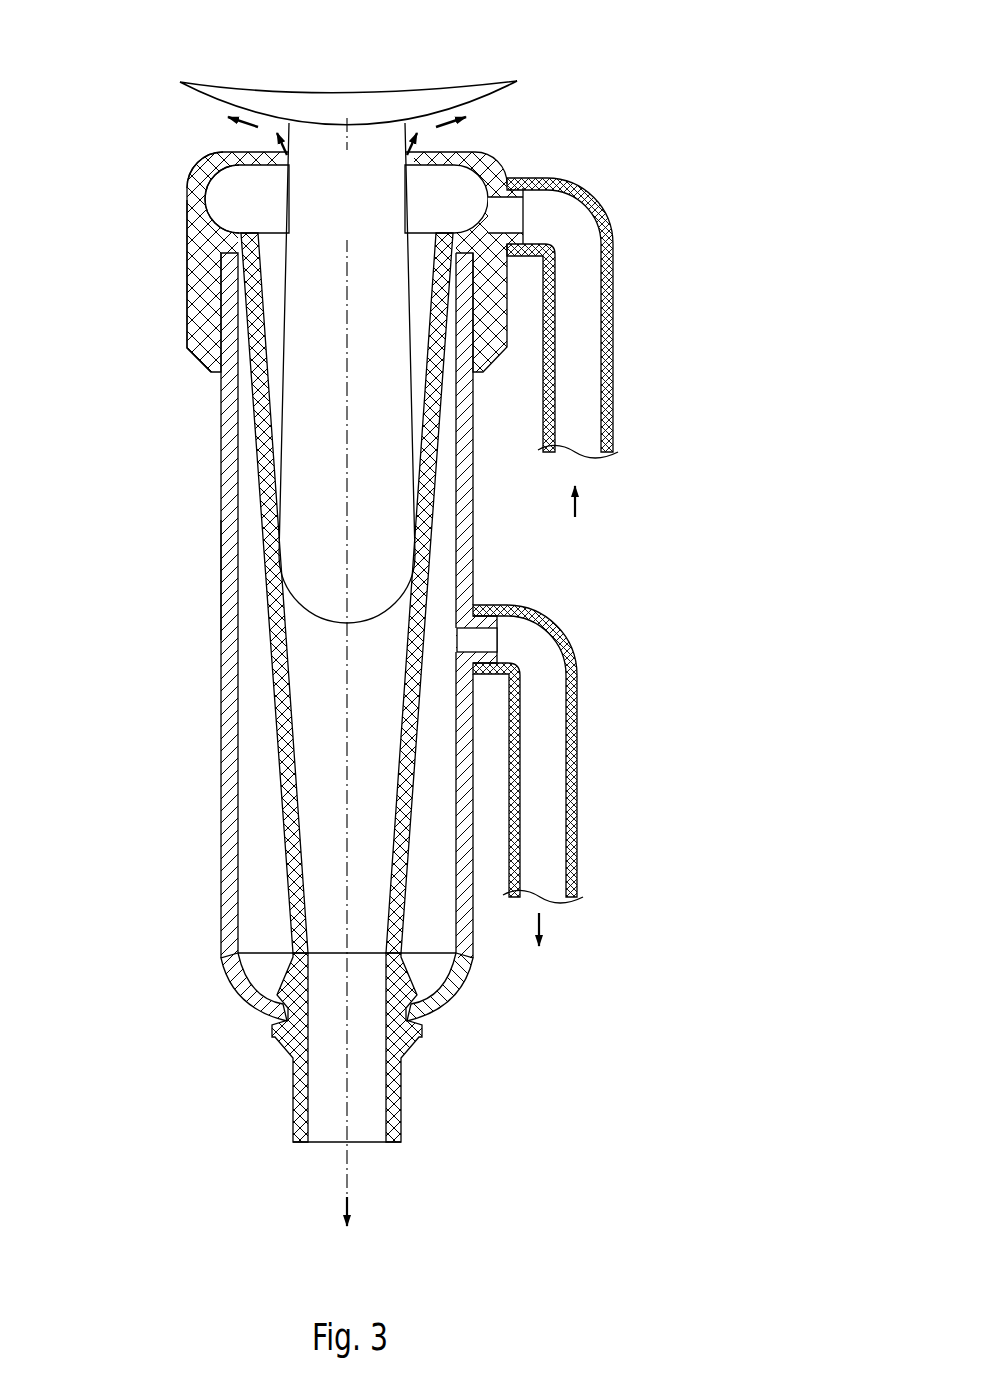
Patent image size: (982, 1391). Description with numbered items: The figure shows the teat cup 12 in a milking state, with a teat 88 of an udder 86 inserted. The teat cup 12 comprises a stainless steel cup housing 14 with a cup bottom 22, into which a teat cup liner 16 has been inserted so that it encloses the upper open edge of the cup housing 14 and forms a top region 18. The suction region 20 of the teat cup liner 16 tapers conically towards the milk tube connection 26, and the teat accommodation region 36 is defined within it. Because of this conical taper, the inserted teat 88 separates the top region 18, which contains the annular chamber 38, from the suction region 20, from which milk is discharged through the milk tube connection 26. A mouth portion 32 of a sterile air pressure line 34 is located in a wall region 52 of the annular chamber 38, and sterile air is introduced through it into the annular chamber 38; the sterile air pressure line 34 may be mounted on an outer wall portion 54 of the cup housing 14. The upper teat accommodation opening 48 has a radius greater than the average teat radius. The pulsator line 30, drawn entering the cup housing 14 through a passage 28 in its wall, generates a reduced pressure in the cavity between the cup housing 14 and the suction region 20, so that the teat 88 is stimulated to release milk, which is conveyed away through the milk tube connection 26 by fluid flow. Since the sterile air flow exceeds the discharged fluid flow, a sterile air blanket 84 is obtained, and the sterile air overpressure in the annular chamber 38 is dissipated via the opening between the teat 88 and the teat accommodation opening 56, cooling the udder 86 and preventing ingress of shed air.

The teat cup 12 is at (722, 200).
The cup housing 14 is at (346, 739).
The teat cup liner 16 is at (341, 218).
The top region 18 is at (198, 250).
The suction region 20 is at (287, 770).
The cup bottom 22 is at (252, 985).
The milk tube connection 26 is at (300, 1100).
The outlet channel 28 is at (490, 632).
The pulsator line 30 is at (591, 738).
The mouth portion 32 is at (530, 210).
The sterile air pressure line 34 is at (624, 347).
The teat accommodation region 36 is at (396, 675).
The annular chamber 38 is at (227, 207).
The upper teat accommodation opening 48 is at (285, 167).
The wall region 52 is at (197, 173).
The outer wall portion 54 is at (233, 573).
The teat accommodation opening 56 is at (417, 160).
The sterile air blanket 84 is at (242, 120).
The udder 86 is at (388, 98).
The teat 88 is at (396, 445).